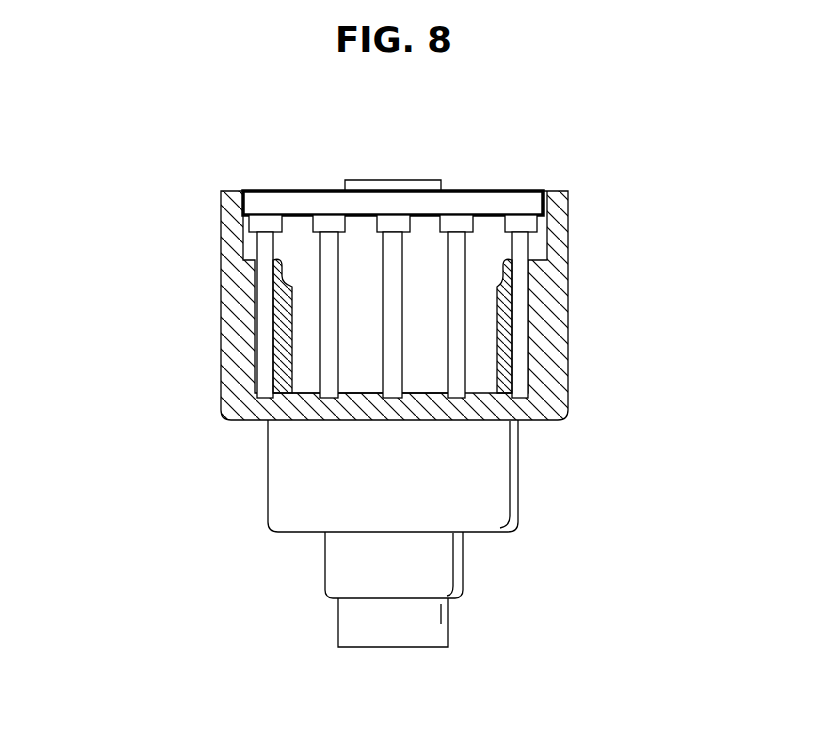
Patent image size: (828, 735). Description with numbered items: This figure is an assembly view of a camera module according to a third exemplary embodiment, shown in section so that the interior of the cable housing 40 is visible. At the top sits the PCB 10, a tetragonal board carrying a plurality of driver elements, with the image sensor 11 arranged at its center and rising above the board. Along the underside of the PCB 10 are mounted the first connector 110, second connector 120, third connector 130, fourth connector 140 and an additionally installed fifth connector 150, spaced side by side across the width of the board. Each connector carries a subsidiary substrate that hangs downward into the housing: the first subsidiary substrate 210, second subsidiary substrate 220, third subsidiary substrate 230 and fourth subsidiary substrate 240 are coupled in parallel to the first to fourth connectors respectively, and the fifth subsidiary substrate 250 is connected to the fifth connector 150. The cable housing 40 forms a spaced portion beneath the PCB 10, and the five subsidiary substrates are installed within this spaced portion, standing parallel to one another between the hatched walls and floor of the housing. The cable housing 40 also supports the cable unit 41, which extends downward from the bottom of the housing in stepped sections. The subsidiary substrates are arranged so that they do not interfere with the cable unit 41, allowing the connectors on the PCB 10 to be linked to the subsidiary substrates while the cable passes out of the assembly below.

The PCB 10 is at (545, 191).
The image sensor 11 is at (408, 180).
The cable housing 40 is at (221, 279).
The cable unit 41 is at (340, 575).
The first connector 110 is at (265, 219).
The second connector 120 is at (329, 219).
The third connector 130 is at (392, 219).
The fourth connector 140 is at (460, 219).
The fifth connector 150 is at (519, 219).
The first subsidiary substrate 210 is at (268, 334).
The second subsidiary substrate 220 is at (320, 380).
The third subsidiary substrate 230 is at (380, 378).
The fourth subsidiary substrate 240 is at (460, 377).
The fifth subsidiary substrate 250 is at (520, 357).